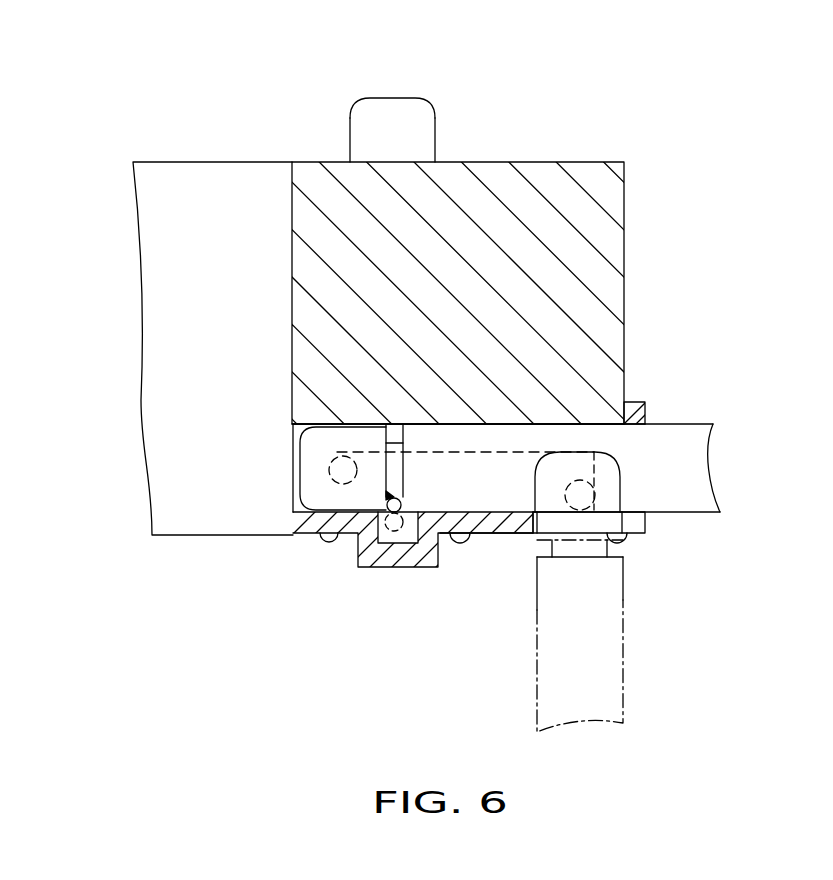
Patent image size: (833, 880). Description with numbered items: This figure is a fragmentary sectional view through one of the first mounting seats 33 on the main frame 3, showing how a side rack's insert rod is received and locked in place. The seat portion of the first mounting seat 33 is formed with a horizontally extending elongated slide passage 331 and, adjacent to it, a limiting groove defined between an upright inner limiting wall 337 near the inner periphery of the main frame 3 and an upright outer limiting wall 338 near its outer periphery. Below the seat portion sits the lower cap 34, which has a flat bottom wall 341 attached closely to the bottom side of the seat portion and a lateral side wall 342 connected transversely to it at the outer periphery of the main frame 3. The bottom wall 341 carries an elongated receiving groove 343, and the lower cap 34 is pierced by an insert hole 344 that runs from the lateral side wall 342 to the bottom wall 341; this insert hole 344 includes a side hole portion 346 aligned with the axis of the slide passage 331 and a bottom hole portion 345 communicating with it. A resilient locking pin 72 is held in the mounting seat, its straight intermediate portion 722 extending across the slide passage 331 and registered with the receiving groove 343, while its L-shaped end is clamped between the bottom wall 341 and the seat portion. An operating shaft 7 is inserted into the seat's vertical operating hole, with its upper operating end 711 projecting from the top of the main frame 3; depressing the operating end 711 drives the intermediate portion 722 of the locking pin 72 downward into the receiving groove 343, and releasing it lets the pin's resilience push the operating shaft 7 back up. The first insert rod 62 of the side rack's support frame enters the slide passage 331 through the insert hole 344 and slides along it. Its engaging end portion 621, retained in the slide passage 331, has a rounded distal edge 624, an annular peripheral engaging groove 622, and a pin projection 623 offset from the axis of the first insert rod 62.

The main frame 3 is at (520, 152).
The first mounting seat 33 is at (600, 323).
The slide passage 331 is at (487, 424).
The operating shaft 7 is at (440, 119).
The upper operating end 711 is at (385, 115).
The engaging end portion 621 is at (348, 433).
The lateral side wall 342 is at (636, 401).
The side hole portion 346 is at (646, 418).
The first insert rod 62 is at (700, 498).
The pin projection 623 is at (585, 485).
The insert hole 344 is at (637, 525).
The outer limiting wall 338 is at (568, 478).
The inner limiting wall 337 is at (338, 474).
The rounded distal edge 624 is at (335, 486).
The bottom wall 341 is at (322, 527).
The resilient locking pin 72 is at (388, 506).
The intermediate portion 722 is at (354, 578).
The annular peripheral engaging groove 622 is at (390, 500).
The lower cap 34 is at (486, 536).
The receiving groove 343 is at (397, 533).
The bottom hole portion 345 is at (512, 537).